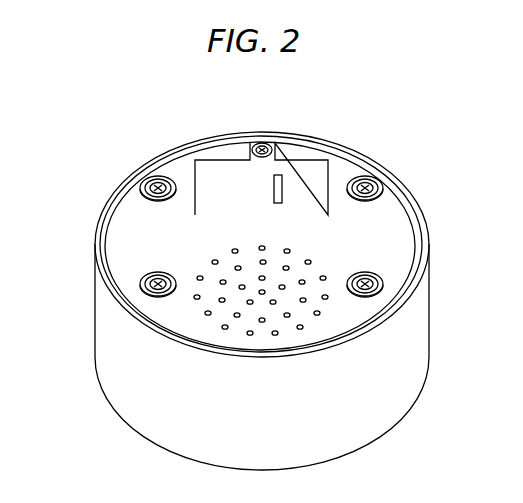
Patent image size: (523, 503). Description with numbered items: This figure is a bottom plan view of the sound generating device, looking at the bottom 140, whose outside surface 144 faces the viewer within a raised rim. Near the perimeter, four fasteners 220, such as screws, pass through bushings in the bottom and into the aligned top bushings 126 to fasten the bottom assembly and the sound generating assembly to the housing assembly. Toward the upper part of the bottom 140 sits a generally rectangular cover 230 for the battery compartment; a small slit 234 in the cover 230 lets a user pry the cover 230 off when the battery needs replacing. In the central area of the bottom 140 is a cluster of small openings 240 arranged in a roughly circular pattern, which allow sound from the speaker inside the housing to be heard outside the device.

The top bushings 126 is at (142, 295).
The bottom 140 is at (125, 230).
The outside surface 144 is at (422, 220).
The fastener 220 is at (145, 180).
The cover 230 is at (215, 168).
The slit 234 is at (287, 180).
The openings 240 is at (290, 313).